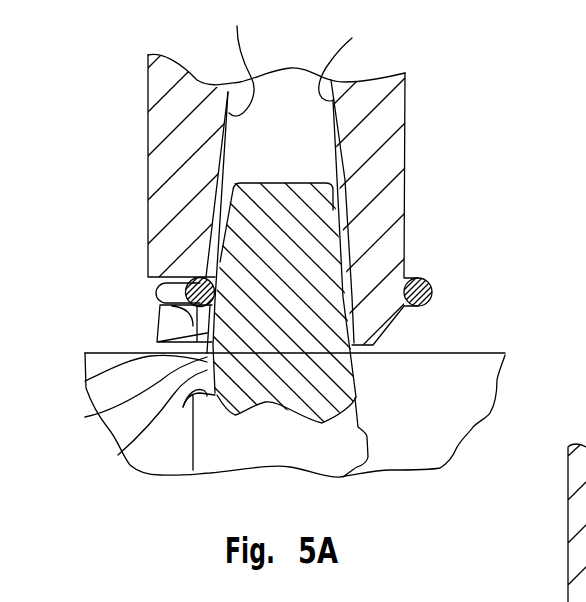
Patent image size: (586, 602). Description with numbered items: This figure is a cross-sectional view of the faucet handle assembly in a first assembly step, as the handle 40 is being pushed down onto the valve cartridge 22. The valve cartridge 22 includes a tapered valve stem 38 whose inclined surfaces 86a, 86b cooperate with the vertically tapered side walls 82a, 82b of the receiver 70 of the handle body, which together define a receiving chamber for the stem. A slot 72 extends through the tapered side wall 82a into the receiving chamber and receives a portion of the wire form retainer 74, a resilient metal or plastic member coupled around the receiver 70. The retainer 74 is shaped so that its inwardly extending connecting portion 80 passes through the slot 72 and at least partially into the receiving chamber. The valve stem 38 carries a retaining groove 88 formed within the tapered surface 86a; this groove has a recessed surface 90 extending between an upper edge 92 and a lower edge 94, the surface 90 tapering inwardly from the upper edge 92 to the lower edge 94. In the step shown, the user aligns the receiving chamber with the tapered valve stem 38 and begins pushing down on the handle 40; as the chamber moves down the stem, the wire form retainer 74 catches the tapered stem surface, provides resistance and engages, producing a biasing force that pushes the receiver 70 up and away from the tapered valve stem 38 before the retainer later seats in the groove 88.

The valve cartridge 22 is at (382, 425).
The valve stem 38 is at (282, 183).
The handle 40 is at (167, 118).
The receiver 70 is at (387, 120).
The slot 72 is at (160, 330).
The wire form retainer 74 is at (445, 274).
The connecting portion 80 is at (184, 289).
The tapered side wall 82a is at (238, 58).
The tapered side wall 82b is at (352, 38).
The tapered surface 86a is at (225, 212).
The tapered surface 86b is at (348, 240).
The retaining groove 88 is at (125, 457).
The recessed surface 90 is at (90, 417).
The upper edge 92 is at (85, 381).
The lower edge 94 is at (182, 412).